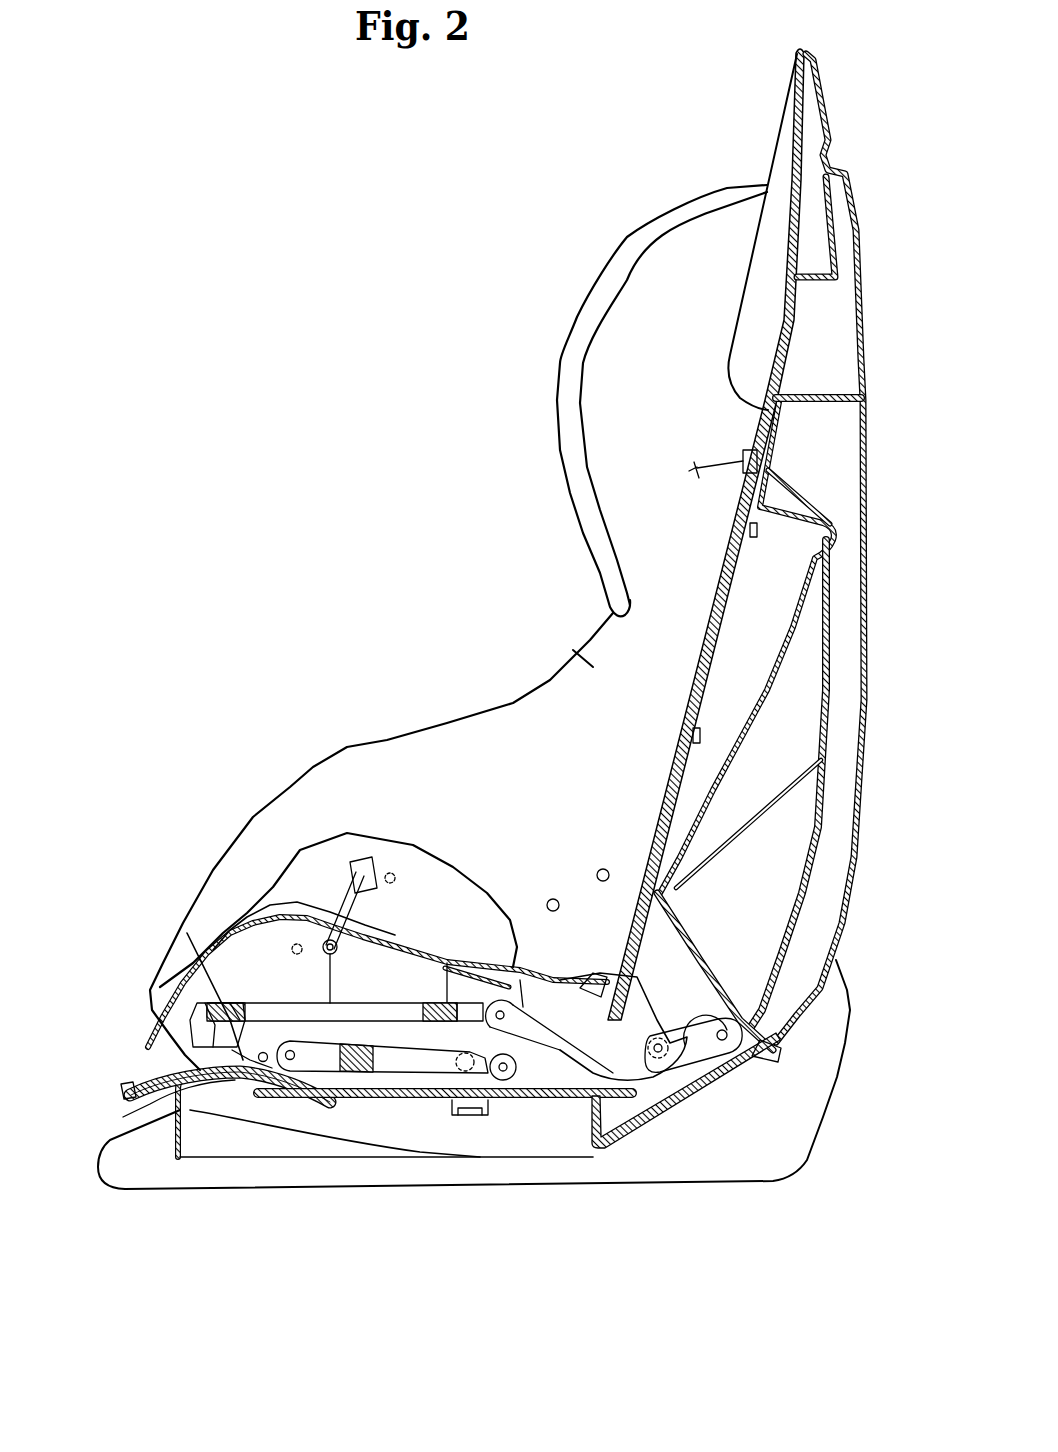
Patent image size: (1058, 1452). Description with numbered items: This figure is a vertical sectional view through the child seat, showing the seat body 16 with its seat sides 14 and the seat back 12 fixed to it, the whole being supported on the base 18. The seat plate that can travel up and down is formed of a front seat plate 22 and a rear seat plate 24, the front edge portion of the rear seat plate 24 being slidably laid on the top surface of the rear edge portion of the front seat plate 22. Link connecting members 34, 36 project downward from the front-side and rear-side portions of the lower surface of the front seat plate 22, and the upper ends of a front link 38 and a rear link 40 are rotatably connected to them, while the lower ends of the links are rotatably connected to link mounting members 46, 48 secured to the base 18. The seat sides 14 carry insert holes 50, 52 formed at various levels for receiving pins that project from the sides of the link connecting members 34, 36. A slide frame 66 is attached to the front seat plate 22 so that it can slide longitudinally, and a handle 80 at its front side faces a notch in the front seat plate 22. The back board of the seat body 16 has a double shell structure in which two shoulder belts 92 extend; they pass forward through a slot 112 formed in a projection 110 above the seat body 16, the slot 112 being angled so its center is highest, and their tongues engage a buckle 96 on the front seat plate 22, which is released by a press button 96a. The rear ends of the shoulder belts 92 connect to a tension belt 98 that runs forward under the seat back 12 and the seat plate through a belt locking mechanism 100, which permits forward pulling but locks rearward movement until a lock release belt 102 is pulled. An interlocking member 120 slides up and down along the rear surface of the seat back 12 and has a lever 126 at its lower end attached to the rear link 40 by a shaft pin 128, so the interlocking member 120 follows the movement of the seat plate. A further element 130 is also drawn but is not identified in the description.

The seat back 12 is at (730, 550).
The seat sides 14 is at (593, 667).
The seat body 16 is at (880, 296).
The base 18 is at (777, 1167).
The front seat plate 22 is at (300, 1005).
The rear seat plate 24 is at (543, 980).
The link connecting member 34 is at (293, 983).
The link connecting member 36 is at (470, 985).
The front link 38 is at (397, 1063).
The rear link 40 is at (560, 1043).
The link mounting member 46 is at (530, 1087).
The link mounting member 48 is at (745, 1060).
The insert hole 50 is at (388, 873).
The insert hole 52 is at (607, 870).
The slide frame 66 is at (262, 1000).
The handle 80 is at (180, 1000).
The shoulder belts 92 is at (745, 458).
The buckle 96 is at (372, 858).
The press button 96a is at (353, 865).
The tension belt 98 is at (133, 1120).
The belt locking mechanism 100 is at (253, 1100).
The lock release belt 102 is at (145, 1077).
The projection 110 is at (813, 393).
The slot 112 is at (768, 462).
The interlocking member 120 is at (733, 587).
The lever 126 is at (640, 1010).
The shaft pin 128 is at (653, 990).
The pin 130 is at (747, 450).